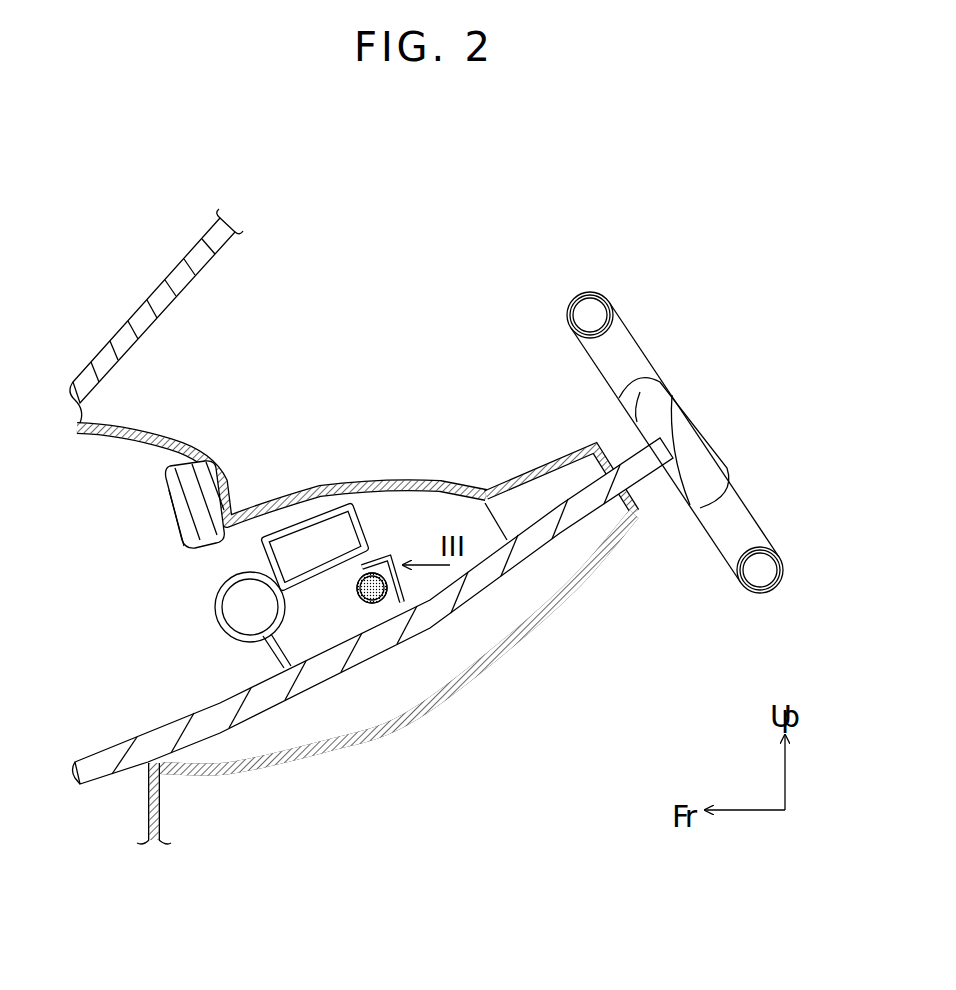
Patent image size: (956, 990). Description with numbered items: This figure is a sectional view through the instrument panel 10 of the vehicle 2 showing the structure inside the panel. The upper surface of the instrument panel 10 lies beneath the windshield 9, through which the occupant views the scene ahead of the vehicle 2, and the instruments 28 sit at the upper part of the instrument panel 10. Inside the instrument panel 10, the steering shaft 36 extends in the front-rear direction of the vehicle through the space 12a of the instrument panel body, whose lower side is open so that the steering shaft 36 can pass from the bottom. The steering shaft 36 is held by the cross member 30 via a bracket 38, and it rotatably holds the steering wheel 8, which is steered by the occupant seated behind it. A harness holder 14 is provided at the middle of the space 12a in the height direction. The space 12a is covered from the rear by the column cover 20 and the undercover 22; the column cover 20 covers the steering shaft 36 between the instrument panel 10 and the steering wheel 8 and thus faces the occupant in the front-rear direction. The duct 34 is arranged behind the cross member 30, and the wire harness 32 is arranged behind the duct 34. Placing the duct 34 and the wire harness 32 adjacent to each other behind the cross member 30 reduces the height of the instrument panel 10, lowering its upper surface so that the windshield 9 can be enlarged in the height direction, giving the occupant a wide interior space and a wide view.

The vehicle 2 is at (380, 262).
The steering wheel 8 is at (595, 308).
The windshield 9 is at (147, 307).
The instrument panel 10 is at (186, 422).
The space 12a is at (394, 554).
The harness holder 14 is at (378, 563).
The column cover 20 is at (583, 570).
The undercover 22 is at (487, 667).
The instruments 28 is at (185, 515).
The cross member 30 is at (238, 607).
The wire harness 32 is at (371, 604).
The duct 34 is at (293, 527).
The steering shaft 36 is at (137, 747).
The bracket 38 is at (273, 665).